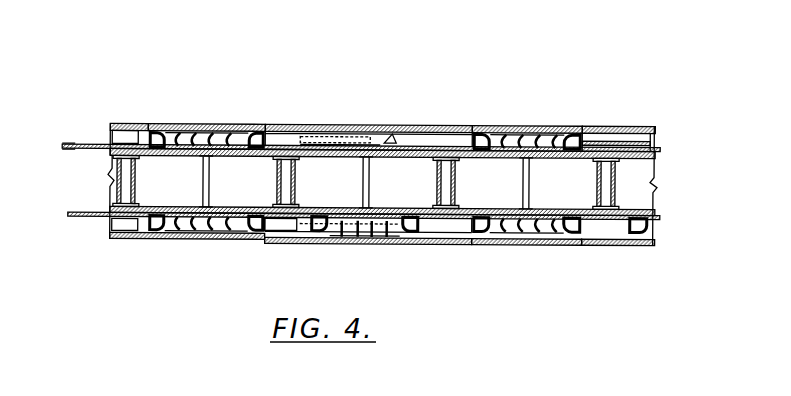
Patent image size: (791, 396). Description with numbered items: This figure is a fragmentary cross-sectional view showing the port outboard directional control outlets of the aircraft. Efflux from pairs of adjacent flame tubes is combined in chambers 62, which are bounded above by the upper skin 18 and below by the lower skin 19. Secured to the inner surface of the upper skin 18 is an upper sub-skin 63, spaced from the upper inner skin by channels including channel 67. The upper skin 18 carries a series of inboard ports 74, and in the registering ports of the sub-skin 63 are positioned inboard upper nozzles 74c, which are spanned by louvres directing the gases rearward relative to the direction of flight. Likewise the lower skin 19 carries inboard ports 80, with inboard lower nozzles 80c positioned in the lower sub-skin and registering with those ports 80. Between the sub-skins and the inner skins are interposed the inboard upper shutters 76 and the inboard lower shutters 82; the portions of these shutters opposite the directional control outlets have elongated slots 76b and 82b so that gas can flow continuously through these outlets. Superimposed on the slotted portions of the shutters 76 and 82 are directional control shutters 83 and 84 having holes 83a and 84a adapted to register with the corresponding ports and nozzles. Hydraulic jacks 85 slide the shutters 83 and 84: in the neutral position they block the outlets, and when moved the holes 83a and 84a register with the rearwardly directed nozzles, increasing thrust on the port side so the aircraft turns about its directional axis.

The upper skin 18 is at (282, 125).
The lower skin 19 is at (298, 236).
The chambers 62 is at (390, 134).
The upper sub-skin 63 is at (346, 125).
The channel 67 is at (625, 140).
The inboard ports 74 is at (205, 125).
The inboard upper nozzles 74c is at (233, 125).
The inboard upper shutters 76 is at (595, 125).
The elongated slots 76b is at (172, 136).
The inboard ports 80 is at (209, 240).
The inboard lower nozzles 80c is at (229, 240).
The inboard lower shutters 82 is at (351, 244).
The elongated slots 82b is at (170, 232).
The directional control shutter 83 is at (83, 146).
The holes 83a is at (126, 132).
The directional control shutter 84 is at (104, 218).
The holes 84a is at (352, 214).
The jacks 85 is at (318, 137).